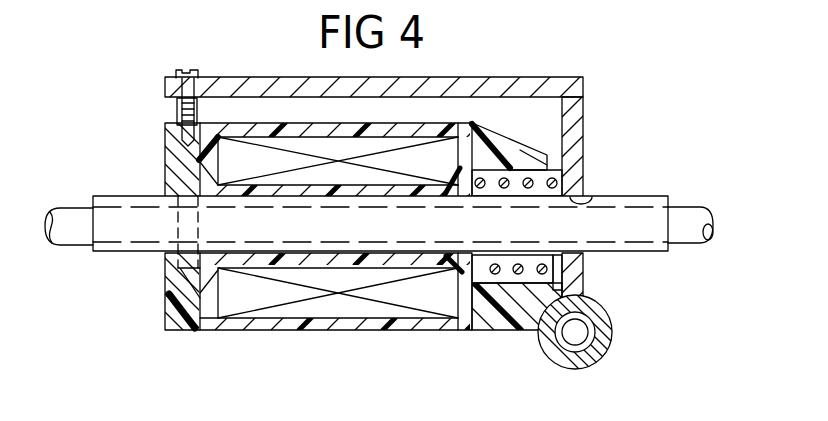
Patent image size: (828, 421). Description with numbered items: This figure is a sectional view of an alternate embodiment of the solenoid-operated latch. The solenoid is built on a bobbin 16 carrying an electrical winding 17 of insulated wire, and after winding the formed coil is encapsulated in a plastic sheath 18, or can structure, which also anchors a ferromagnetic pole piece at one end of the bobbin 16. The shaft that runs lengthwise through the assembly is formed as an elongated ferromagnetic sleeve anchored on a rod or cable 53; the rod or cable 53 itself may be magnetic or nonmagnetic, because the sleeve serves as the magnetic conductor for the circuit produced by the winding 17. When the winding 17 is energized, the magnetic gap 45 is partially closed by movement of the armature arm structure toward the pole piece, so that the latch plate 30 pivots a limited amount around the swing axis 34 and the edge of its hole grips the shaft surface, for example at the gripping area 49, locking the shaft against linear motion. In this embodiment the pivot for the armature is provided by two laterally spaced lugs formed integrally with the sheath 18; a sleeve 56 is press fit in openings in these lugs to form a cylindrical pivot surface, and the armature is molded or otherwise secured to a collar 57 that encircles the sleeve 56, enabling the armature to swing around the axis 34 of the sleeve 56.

The bobbin 16 is at (453, 298).
The electrical winding 17 is at (258, 300).
The sheath 18 is at (184, 332).
The latch plate 30 is at (585, 118).
The swing axis 34 is at (568, 332).
The magnetic gap 45 is at (178, 100).
The gripping area 49 is at (592, 196).
The rod or cable 53 is at (80, 207).
The sleeve 56 is at (596, 362).
The collar 57 is at (610, 311).